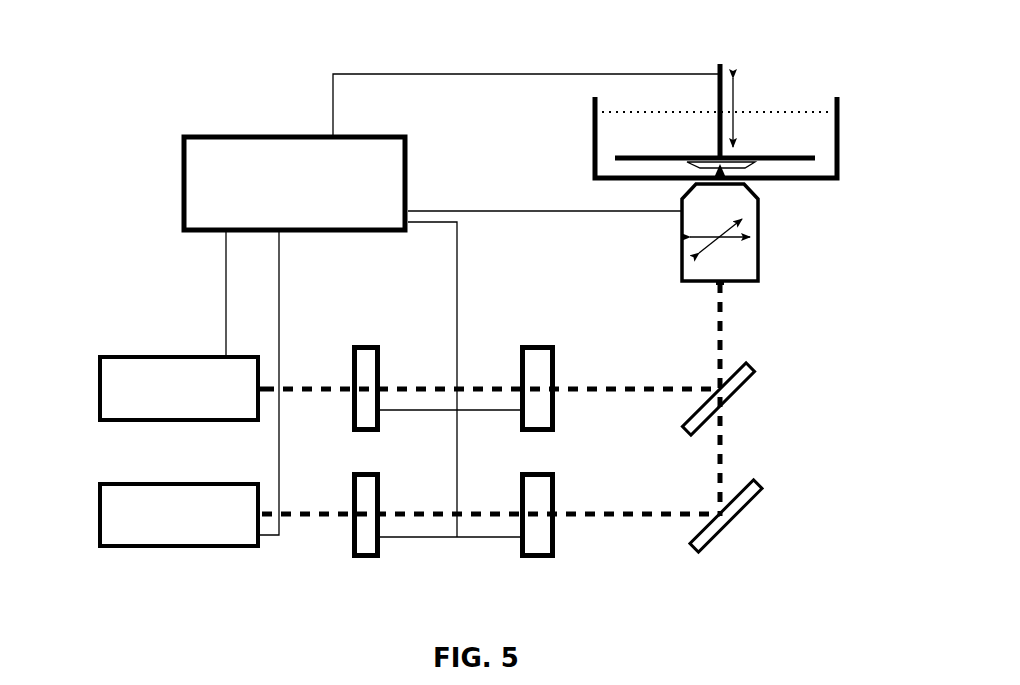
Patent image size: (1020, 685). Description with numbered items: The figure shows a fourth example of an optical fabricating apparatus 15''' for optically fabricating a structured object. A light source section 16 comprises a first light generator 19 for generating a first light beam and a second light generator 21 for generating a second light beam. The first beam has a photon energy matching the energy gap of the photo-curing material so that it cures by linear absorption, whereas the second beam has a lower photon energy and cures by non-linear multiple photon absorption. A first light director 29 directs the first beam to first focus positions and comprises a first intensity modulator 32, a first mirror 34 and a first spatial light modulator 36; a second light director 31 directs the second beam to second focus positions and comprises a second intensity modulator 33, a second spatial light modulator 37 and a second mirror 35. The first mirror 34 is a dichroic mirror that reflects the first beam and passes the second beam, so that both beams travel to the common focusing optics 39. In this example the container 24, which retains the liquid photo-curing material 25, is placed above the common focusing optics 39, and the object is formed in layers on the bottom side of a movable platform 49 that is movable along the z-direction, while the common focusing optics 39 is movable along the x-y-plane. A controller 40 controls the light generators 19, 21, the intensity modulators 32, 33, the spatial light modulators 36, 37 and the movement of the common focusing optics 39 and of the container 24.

The optical fabricating apparatus 15''' is at (459, 314).
The controller 40 is at (277, 194).
The light source section 16 is at (152, 462).
The first light generator 19 is at (165, 402).
The second light generator 21 is at (165, 527).
The first intensity modulator 32 is at (379, 366).
The second intensity modulator 33 is at (379, 544).
The first spatial light modulator 36 is at (556, 366).
The second spatial light modulator 37 is at (556, 544).
The first light director 29 is at (770, 373).
The second light director 31 is at (779, 494).
The first mirror 34 is at (748, 378).
The second mirror 35 is at (750, 501).
The common focusing optics 39 is at (737, 273).
The container 24 is at (794, 178).
The liquid photo-curing material 25 is at (763, 130).
The movable platform 49 is at (797, 157).